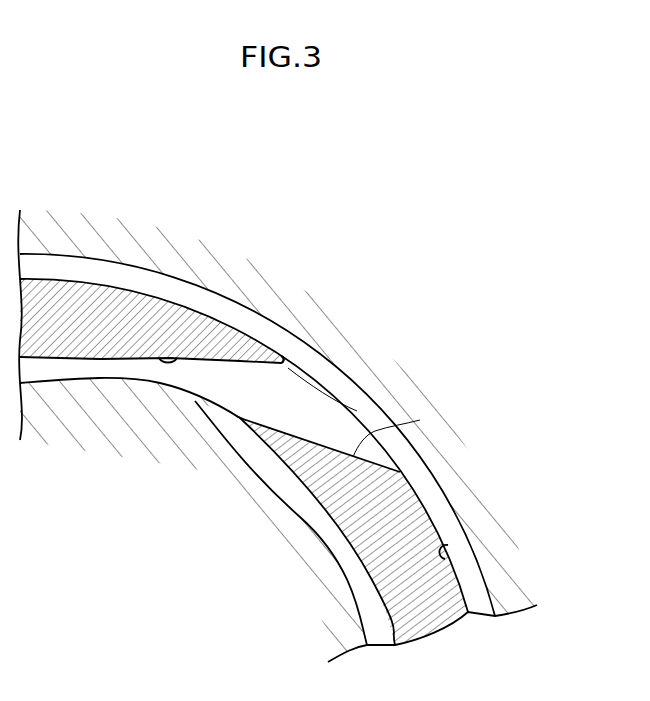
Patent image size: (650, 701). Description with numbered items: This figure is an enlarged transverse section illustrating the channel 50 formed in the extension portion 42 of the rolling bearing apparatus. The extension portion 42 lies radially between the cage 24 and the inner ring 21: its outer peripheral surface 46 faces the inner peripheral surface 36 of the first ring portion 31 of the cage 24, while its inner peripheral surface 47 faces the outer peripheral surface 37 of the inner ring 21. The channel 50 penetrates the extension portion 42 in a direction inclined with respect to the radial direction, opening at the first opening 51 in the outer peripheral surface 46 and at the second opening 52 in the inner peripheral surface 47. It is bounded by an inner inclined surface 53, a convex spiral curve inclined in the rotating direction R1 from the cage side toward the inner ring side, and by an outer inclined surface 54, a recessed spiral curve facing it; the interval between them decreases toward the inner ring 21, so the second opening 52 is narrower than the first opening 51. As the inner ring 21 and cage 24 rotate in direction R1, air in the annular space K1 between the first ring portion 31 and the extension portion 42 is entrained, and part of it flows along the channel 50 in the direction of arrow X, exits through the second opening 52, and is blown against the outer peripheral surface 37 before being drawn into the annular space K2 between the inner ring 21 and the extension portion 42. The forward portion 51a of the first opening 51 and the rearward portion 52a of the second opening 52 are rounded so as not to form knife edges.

The first ring portion 31 is at (115, 230).
The cage 24 is at (277, 436).
The extension portion 42 is at (67, 281).
The channel 50 is at (297, 364).
The outer inclined surface 54 is at (159, 357).
The forward portion of the first opening 51a is at (287, 378).
The first opening 51 is at (357, 411).
The second opening 52 is at (200, 402).
The rearward portion of the second opening 52a is at (238, 419).
The inner inclined surface 53 is at (420, 420).
The outer peripheral surface of the inner ring 37 is at (300, 517).
The outer peripheral surface of the extension portion 46 is at (462, 588).
The inner peripheral surface of the first ring portion 36 is at (448, 552).
The inner peripheral surface of the extension portion 47 is at (357, 568).
The inner ring 21 is at (90, 415).
The annular space K1 is at (217, 309).
The annular space K2 is at (50, 373).
The rotating direction R1 is at (357, 228).
The air flow direction X is at (350, 398).